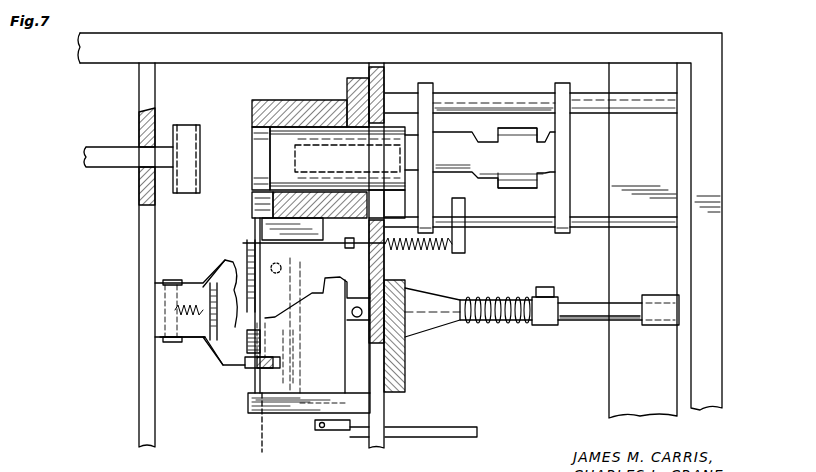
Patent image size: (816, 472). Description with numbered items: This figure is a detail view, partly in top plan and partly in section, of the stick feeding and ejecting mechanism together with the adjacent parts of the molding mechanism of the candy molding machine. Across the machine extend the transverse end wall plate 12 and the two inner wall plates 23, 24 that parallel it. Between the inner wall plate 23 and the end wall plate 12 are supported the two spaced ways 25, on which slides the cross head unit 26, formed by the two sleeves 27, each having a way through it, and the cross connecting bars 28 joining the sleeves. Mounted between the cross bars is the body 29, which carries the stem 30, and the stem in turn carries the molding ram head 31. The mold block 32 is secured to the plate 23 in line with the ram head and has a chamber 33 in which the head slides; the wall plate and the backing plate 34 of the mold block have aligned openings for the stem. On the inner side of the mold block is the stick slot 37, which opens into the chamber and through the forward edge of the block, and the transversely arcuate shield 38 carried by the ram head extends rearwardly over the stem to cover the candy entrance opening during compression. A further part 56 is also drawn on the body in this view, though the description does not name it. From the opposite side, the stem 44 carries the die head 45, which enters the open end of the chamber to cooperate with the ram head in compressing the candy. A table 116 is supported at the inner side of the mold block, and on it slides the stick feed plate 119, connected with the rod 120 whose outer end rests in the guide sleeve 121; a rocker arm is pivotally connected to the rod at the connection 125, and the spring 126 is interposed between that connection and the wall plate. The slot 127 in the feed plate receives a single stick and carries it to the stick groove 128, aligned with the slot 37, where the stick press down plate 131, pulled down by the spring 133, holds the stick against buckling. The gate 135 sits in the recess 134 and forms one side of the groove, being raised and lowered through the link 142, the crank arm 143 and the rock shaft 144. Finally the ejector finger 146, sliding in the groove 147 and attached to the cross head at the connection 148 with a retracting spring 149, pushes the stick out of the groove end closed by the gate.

The end wall plate 12 is at (714, 251).
The inner wall plate 23 is at (378, 419).
The inner wall plate 24 is at (143, 232).
The ways 25 is at (636, 100).
The cross head unit 26 is at (500, 88).
The sleeves 27 is at (533, 98).
The cross connecting bars 28 is at (425, 102).
The body 29 is at (547, 160).
The stem 30 is at (413, 153).
The molding ram head 31 is at (280, 155).
The mold block 32 is at (294, 107).
The chamber 33 is at (254, 133).
The backing plate 34 is at (350, 86).
The stick slot 37 is at (257, 197).
The transversely arcuate shield 38 is at (390, 133).
The stem 44 is at (113, 152).
The die head 45 is at (183, 126).
The slot 56 is at (541, 130).
The table 116 is at (294, 415).
The stick feed plate 119 is at (267, 390).
The rod 120 is at (591, 318).
The guide sleeve 121 is at (662, 318).
The pivotal connection 125 is at (550, 295).
The spring 126 is at (515, 322).
The slot 127 is at (272, 378).
The stick groove 128 is at (263, 415).
The stick press down plate 131 is at (192, 337).
The spring 133 is at (165, 293).
The recess 134 is at (247, 315).
The gate 135 is at (250, 258).
The link 142 is at (442, 433).
The crank arm 143 is at (332, 431).
The rock shaft 144 is at (335, 283).
The ejector finger 146 is at (248, 243).
The groove 147 is at (253, 222).
The connection 148 is at (455, 248).
The spring 149 is at (400, 250).